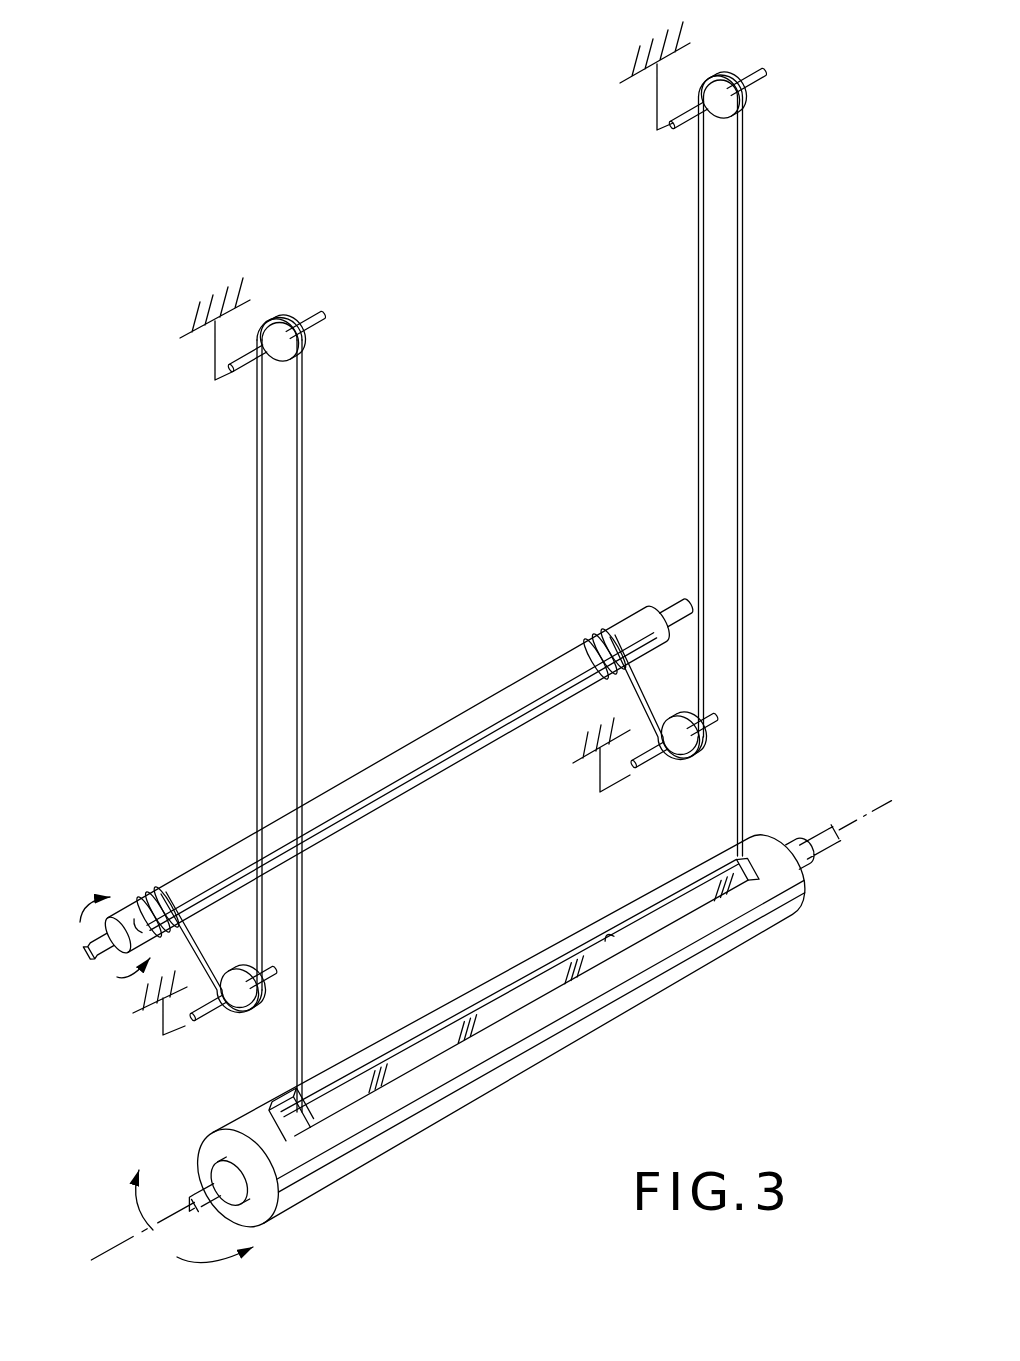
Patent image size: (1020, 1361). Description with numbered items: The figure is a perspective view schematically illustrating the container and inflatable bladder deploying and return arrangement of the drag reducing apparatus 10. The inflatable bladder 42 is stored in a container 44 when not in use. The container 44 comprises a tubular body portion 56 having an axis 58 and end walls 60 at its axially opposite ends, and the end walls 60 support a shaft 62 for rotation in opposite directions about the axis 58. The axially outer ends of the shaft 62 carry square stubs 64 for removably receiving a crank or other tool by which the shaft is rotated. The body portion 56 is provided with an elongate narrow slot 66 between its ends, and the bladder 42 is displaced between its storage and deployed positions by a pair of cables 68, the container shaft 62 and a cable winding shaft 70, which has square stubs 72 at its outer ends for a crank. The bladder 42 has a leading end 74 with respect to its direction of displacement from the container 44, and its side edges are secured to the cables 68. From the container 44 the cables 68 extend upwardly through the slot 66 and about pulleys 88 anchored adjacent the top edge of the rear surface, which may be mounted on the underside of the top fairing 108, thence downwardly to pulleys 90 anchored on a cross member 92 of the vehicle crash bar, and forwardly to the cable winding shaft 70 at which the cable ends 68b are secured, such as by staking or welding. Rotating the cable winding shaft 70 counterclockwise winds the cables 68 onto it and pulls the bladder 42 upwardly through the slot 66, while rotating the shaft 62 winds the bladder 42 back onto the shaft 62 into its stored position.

The drag reducing apparatus 10 is at (480, 667).
The inflatable bladder 42 is at (647, 928).
The container 44 is at (491, 1059).
The tubular body portion 56 is at (483, 1086).
The axis 58 is at (110, 1252).
The end walls 60 is at (258, 1203).
The shaft 62 is at (208, 1152).
The square stubs 64 is at (200, 1188).
The slot 66 is at (622, 948).
The cables 68 is at (302, 597).
The cable ends 68b is at (598, 636).
The cable winding shaft 70 is at (382, 783).
The square stubs 72 is at (682, 605).
The leading end 74 is at (386, 1052).
The pulleys 88 is at (333, 306).
The pulleys 90 is at (247, 1013).
The cross member 92 is at (143, 1013).
The top fairing 108 is at (195, 338).